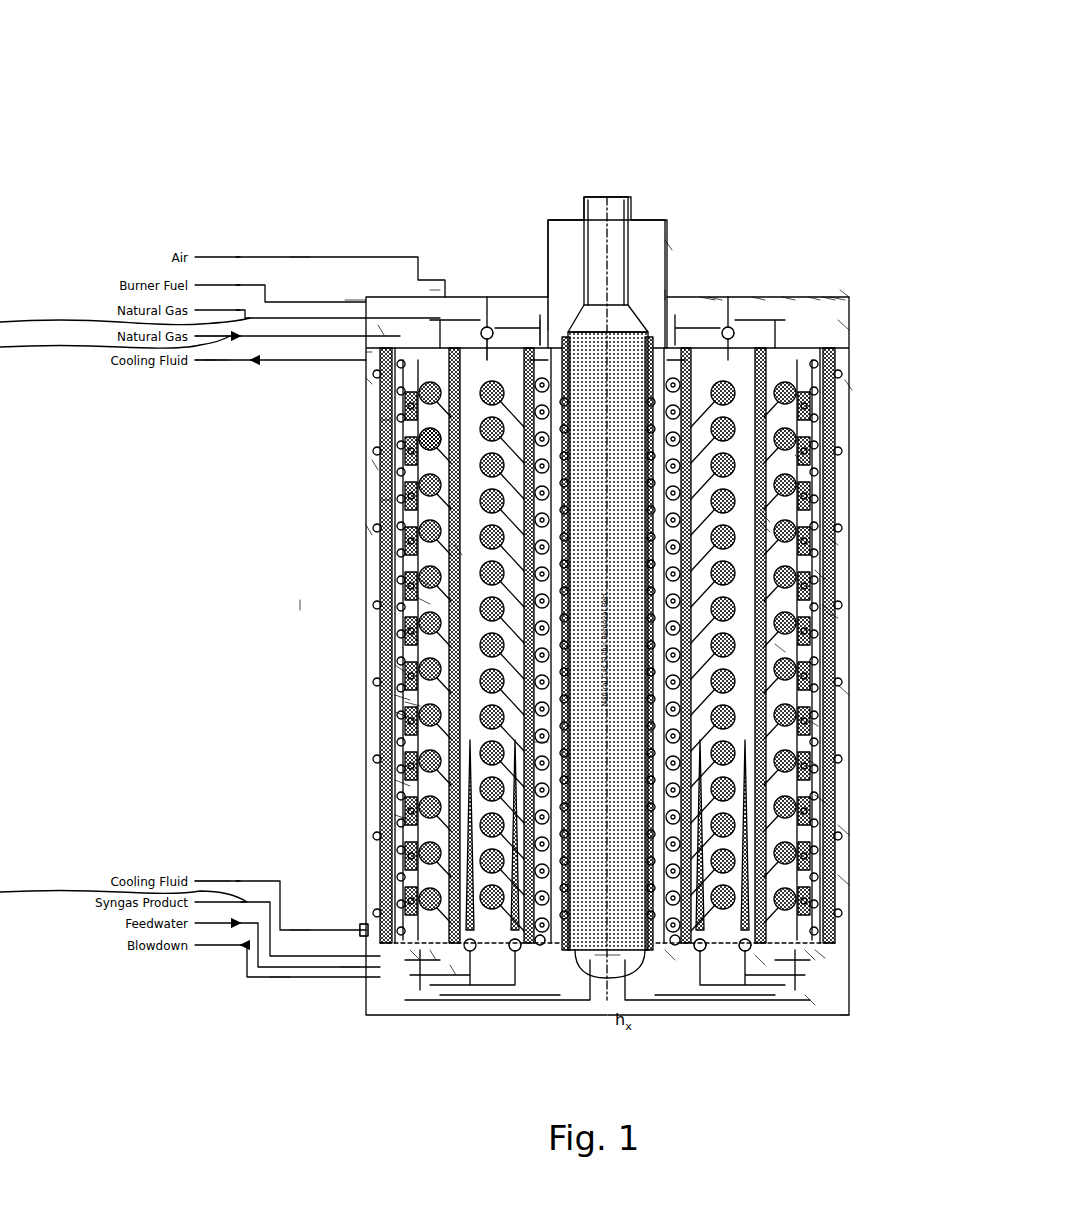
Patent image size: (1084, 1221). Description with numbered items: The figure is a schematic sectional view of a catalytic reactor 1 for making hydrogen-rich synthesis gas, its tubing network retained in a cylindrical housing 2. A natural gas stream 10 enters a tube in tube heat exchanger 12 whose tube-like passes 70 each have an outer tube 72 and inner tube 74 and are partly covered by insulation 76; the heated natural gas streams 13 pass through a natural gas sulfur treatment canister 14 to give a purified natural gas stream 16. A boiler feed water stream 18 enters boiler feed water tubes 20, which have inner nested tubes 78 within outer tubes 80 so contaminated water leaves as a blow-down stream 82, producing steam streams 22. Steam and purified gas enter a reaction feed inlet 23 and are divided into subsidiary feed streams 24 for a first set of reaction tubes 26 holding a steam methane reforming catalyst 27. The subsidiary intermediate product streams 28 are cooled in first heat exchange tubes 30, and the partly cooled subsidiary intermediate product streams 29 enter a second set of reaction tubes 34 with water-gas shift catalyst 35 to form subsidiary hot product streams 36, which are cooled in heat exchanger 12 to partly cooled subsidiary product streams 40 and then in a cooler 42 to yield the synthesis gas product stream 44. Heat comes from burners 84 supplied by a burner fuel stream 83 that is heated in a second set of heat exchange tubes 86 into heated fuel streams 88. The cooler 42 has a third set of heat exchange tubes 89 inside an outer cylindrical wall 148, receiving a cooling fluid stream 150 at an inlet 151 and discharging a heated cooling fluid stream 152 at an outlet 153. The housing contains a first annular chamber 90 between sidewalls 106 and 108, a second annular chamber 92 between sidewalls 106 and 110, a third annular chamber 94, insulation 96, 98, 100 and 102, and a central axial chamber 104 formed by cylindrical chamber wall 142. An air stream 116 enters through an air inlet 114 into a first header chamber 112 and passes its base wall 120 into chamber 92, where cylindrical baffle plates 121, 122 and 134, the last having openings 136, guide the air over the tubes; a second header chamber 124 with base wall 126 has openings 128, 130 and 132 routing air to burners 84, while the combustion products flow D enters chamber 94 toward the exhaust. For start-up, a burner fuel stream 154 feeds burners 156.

The reformer apparatus 1 is at (718, 88).
The flow of combustion products D is at (648, 220).
The housing 2 is at (850, 385).
The natural gas stream 10 is at (75, 340).
The tube in tube heat exchanger 12 is at (295, 605).
The heated natural gas streams 13 is at (455, 968).
The natural gas sulfur treatment canister 14 is at (600, 955).
The purified natural gas stream 16 is at (545, 325).
The boiler feed water stream 18 is at (345, 968).
The boiler feed water tubes 20 is at (375, 505).
The steam streams 22 is at (540, 330).
The reaction feed inlet 23 is at (484, 330).
The subsidiary feed streams 24 is at (487, 348).
The first set of reaction tubes 26 is at (470, 632).
The steam methane reforming catalyst 27 is at (470, 552).
The subsidiary intermediate product streams 28 is at (432, 955).
The partly cooled subsidiary intermediate product streams 29 is at (375, 425).
The first set of heat exchange tubes 30 is at (405, 818).
The second set of reaction tubes 34 is at (428, 583).
The water-gas shift catalyst 35 is at (445, 445).
The subsidiary hot product streams 36 is at (415, 952).
The partly cooled subsidiary product streams 40 is at (378, 330).
The cooler 42 is at (372, 530).
The synthesis gas product stream 44 is at (80, 900).
The tube-like passes 70 is at (405, 715).
The outer tube 72 is at (400, 668).
The inner tube 74 is at (405, 698).
The insulation 76 is at (405, 783).
The inner nested tubes 78 is at (540, 742).
The outer tubes 80 is at (412, 705).
The blow-down stream 82 is at (280, 980).
The burner fuel stream 83 is at (350, 300).
The burners 84 is at (513, 955).
The second set of heat exchange tubes 86 is at (428, 600).
The heated fuel streams 88 is at (590, 965).
The third set of heat exchange tubes 89 is at (372, 465).
The first annular chamber 90 is at (815, 295).
The second annular chamber 92 is at (812, 762).
The third annular chamber 94 is at (820, 575).
The insulation 96 is at (780, 648).
The insulation 98 is at (812, 722).
The insulation 100 is at (828, 608).
The insulation 102 is at (832, 615).
The central axial chamber 104 is at (662, 255).
The cylindrical chamber sidewall 106 is at (767, 527).
The cylindrical chamber sidewall 108 is at (765, 517).
The cylindrical chamber side wall 110 is at (830, 540).
The first header chamber 112 is at (850, 292).
The air inlet 114 is at (435, 292).
The air stream 116 is at (300, 255).
The base wall 120 is at (790, 300).
The cylindrical baffle plate 121 is at (800, 460).
The cylindrical baffle plate 122 is at (845, 690).
The second header chamber 124 is at (845, 1020).
The base wall 126 is at (670, 958).
The openings 128 is at (820, 955).
The openings 130 is at (705, 960).
The openings 132 is at (760, 960).
The cylindrical baffle plate 134 is at (822, 800).
The openings 136 is at (830, 290).
The cylindrical chamber wall 142 is at (715, 300).
The outer cylindrical wall 148 is at (845, 830).
The cooling fluid stream 150 is at (300, 928).
The inlet 151 is at (362, 930).
The heated cooling fluid stream 152 is at (212, 365).
The outlet 153 is at (366, 382).
The burner fuel stream 154 is at (110, 362).
The burners 156 is at (366, 352).